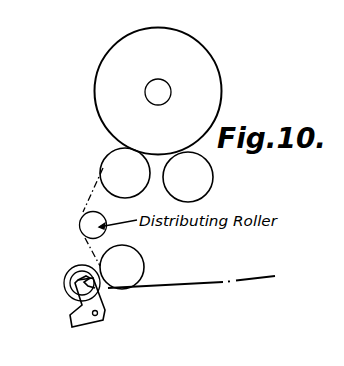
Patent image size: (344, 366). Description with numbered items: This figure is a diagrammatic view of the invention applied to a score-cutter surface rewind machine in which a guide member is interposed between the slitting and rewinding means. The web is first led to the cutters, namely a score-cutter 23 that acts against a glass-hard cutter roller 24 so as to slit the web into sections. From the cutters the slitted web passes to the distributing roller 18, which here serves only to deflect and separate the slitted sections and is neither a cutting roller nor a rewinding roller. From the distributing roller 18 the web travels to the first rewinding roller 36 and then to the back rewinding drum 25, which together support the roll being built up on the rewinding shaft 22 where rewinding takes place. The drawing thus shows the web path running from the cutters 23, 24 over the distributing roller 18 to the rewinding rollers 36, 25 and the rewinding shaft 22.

The rewinding shaft 22 is at (170, 84).
The first rewinding roller 36 is at (112, 165).
The back rewinding drum 25 is at (202, 185).
The distributing roller 18 is at (92, 228).
The cutter roller 24 is at (140, 263).
The score-cutter 23 is at (65, 273).